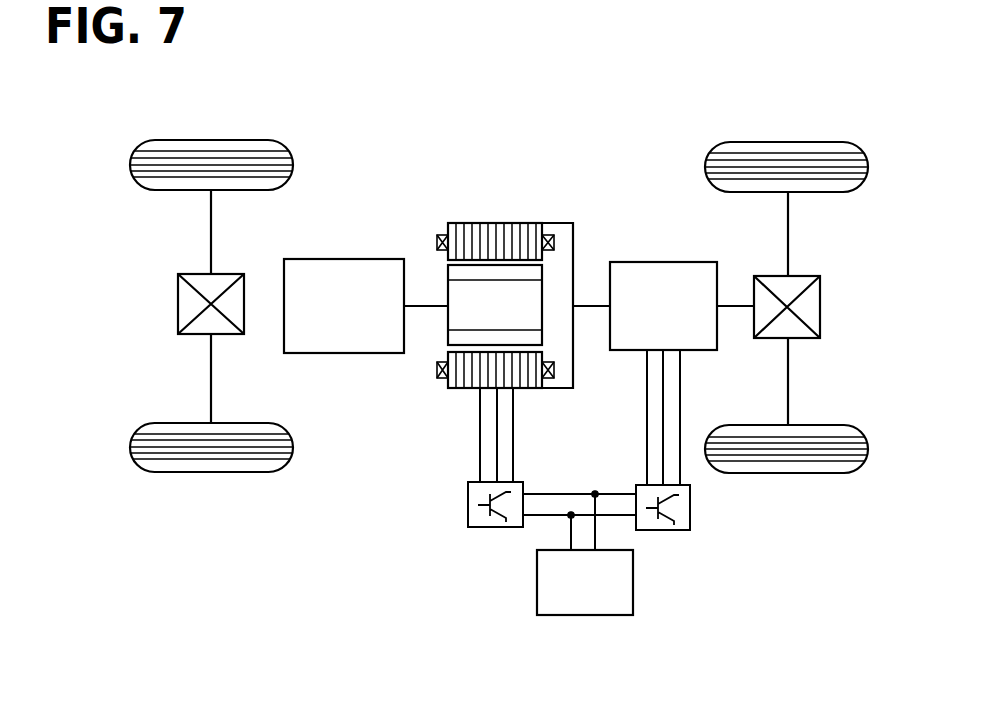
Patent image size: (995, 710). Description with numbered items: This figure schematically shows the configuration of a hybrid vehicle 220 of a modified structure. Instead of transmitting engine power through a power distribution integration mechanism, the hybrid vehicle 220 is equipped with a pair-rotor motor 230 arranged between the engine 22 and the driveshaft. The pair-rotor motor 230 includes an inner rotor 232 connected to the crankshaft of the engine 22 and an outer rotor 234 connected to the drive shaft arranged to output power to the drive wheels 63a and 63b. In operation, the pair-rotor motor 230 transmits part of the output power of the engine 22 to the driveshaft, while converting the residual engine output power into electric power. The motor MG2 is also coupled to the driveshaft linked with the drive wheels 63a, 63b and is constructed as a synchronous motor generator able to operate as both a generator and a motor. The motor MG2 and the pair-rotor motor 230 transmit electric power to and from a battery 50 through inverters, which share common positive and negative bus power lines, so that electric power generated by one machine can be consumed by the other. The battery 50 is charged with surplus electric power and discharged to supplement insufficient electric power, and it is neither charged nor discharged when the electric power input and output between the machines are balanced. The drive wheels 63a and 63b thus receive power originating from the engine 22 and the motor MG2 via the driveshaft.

The engine 22 is at (343, 353).
The pair-rotor motor 230 is at (491, 252).
The inner rotor 232 is at (448, 290).
The outer rotor 234 is at (497, 224).
The hybrid vehicle 220 is at (603, 150).
The motor MG2 is at (661, 262).
The drive wheel 63a is at (787, 142).
The drive wheel 63b is at (787, 473).
The battery 50 is at (633, 578).